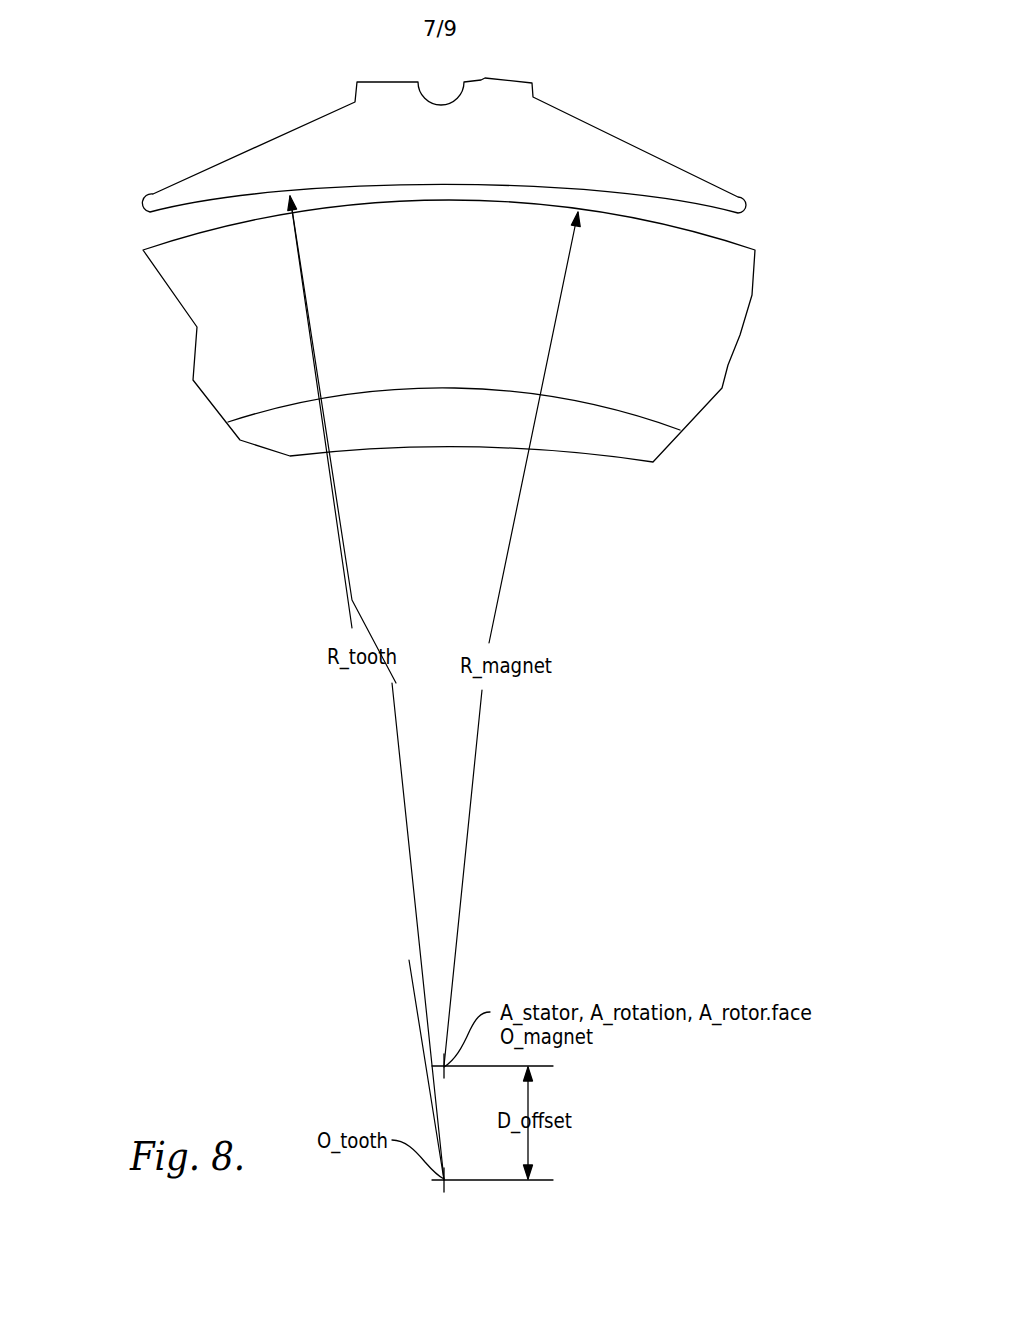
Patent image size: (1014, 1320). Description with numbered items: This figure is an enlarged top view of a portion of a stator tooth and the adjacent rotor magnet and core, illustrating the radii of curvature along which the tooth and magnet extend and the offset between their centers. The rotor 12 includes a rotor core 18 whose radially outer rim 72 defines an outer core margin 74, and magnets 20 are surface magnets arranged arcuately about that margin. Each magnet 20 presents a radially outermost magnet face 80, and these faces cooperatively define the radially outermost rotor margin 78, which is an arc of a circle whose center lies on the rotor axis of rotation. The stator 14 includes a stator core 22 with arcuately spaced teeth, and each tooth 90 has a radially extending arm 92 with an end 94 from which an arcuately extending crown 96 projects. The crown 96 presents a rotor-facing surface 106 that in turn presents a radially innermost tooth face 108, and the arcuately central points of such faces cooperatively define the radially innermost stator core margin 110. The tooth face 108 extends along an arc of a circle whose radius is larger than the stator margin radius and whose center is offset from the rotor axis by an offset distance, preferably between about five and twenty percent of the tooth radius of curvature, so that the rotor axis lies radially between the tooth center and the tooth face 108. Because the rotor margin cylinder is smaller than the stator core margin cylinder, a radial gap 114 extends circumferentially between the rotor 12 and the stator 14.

The rotor 12 is at (200, 446).
The stator 14 is at (614, 46).
The rotor core 18 is at (481, 435).
The magnets 20 is at (716, 341).
The stator core 22 is at (496, 92).
The radially outer rim 72 is at (412, 428).
The outer core margin 74 is at (423, 388).
The radially outermost rotor margin 78 is at (268, 215).
The radially outermost magnet face 80 is at (277, 213).
The tooth 90 is at (510, 126).
The radially extending arm 92 is at (375, 88).
The end 94 is at (370, 113).
The crown 96 is at (380, 152).
The rotor-facing surface 106 is at (413, 182).
The radially innermost tooth face 108 is at (430, 182).
The radially innermost stator core margin 110 is at (447, 182).
The radial gap 114 is at (545, 183).